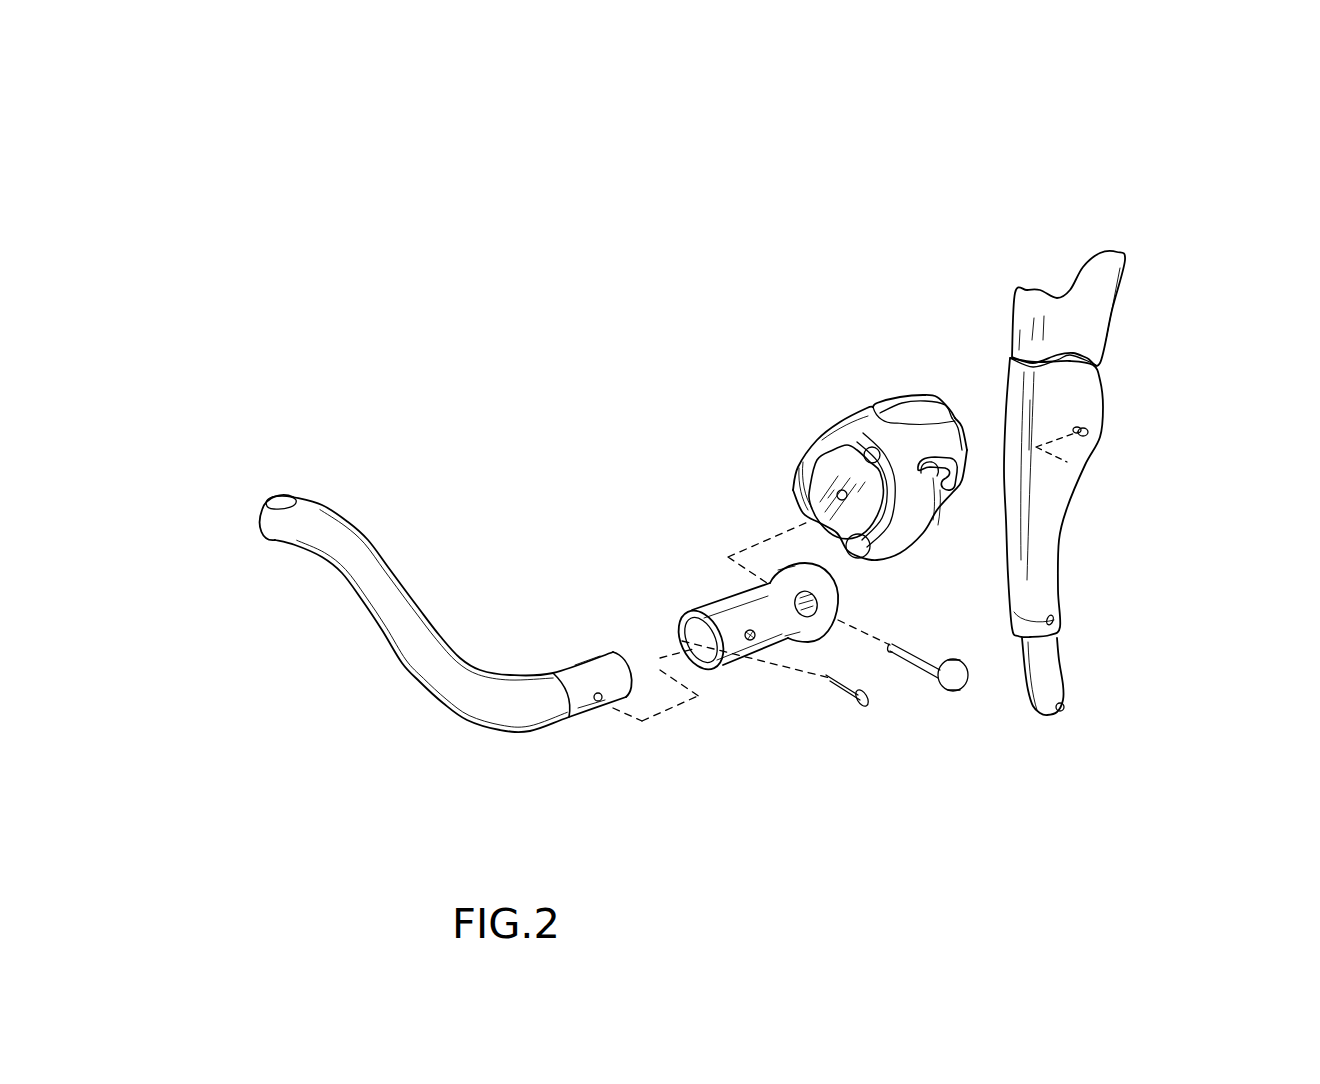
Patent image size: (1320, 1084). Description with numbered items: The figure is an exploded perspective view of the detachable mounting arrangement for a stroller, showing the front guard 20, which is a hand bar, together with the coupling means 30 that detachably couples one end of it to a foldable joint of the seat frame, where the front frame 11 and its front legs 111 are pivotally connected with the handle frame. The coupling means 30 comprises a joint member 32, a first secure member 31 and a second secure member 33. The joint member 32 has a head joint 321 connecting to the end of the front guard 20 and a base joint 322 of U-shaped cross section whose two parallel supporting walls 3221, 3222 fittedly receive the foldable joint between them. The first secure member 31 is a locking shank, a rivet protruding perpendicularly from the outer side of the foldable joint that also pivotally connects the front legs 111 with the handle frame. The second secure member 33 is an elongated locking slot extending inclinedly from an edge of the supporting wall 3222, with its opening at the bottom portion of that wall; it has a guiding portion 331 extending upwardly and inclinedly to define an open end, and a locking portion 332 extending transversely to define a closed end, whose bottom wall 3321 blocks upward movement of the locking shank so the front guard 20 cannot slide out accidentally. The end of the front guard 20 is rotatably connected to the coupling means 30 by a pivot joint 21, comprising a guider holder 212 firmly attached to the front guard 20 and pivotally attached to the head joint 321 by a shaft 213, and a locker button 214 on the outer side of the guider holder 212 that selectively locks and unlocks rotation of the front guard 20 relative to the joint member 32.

The front frame 11 is at (1129, 536).
The front legs 111 is at (1047, 676).
The front guard 20 is at (378, 580).
The pivot joint 21 is at (824, 693).
The guider holder 212 is at (740, 664).
The shaft 213 is at (913, 667).
The locker button 214 is at (960, 688).
The coupling means 30 is at (982, 189).
The first secure member 31 is at (1101, 431).
The joint member 32 is at (909, 394).
The head joint 321 is at (812, 467).
The base joint 322 is at (897, 322).
The supporting wall 3221 is at (897, 423).
The supporting wall 3222 is at (955, 416).
The second secure member 33 is at (961, 495).
The guiding portion 331 is at (966, 468).
The locking portion 332 is at (916, 442).
The bottom wall 3321 is at (888, 548).